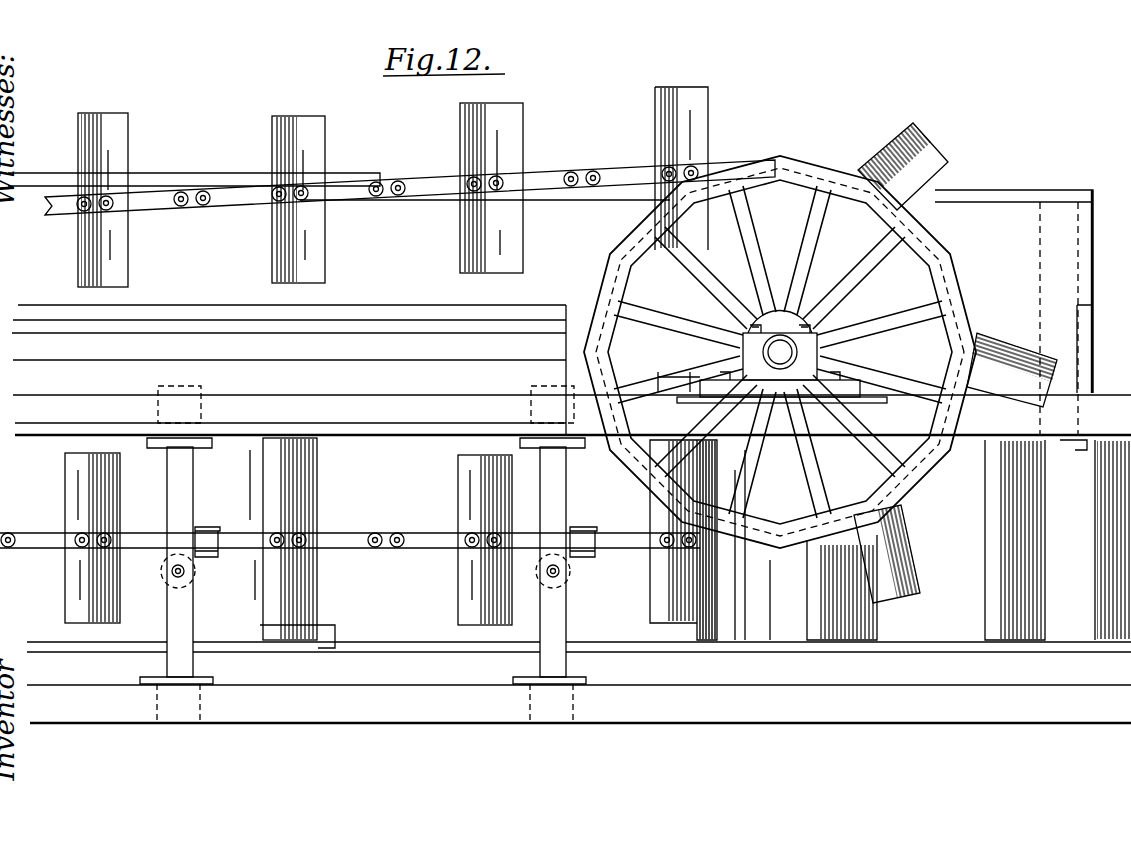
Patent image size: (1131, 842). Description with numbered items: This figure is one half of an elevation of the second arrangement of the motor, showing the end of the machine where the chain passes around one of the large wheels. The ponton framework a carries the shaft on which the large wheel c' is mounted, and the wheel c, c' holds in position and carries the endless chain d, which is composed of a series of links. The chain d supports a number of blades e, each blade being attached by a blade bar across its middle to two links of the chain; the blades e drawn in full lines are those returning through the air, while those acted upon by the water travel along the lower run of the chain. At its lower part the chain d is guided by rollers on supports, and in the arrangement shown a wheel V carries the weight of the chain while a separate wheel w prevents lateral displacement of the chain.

The framework of the ponton a is at (98, 708).
The endless chain d is at (236, 200).
The blades e is at (128, 153).
The large wheel c' is at (787, 352).
The large wheel c is at (772, 356).
The wheel V is at (165, 573).
The wheel w is at (215, 557).